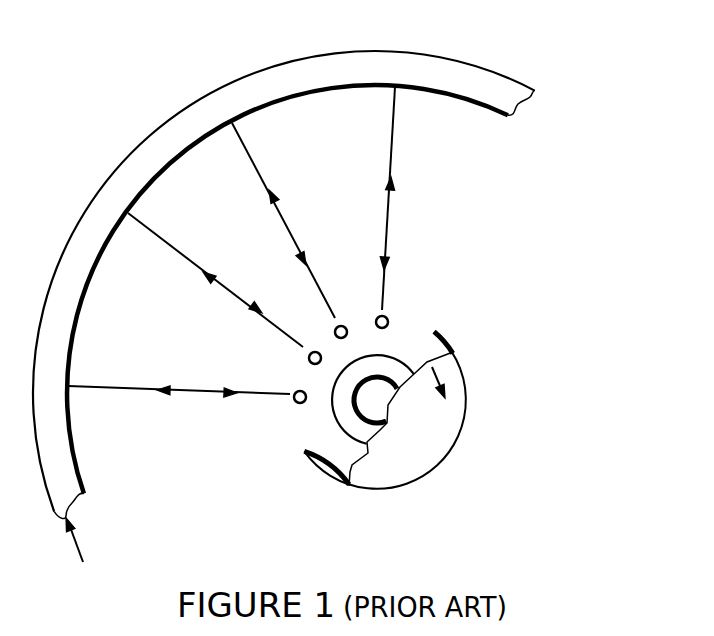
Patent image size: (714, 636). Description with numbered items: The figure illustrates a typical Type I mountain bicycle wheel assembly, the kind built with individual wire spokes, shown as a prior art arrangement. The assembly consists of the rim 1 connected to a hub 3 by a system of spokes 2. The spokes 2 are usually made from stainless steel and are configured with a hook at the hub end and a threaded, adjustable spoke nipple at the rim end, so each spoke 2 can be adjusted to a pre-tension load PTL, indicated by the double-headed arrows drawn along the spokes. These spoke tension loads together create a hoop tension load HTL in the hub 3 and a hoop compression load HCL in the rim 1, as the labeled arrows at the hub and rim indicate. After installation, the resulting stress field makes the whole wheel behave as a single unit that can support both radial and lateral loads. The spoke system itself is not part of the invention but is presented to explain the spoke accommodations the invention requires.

The rim 1 is at (445, 70).
The spokes 2 is at (389, 222).
The hub 3 is at (437, 332).
The hoop compression load HCL is at (536, 105).
The pre-tension load PTL is at (175, 421).
The hoop tension load HTL is at (353, 468).